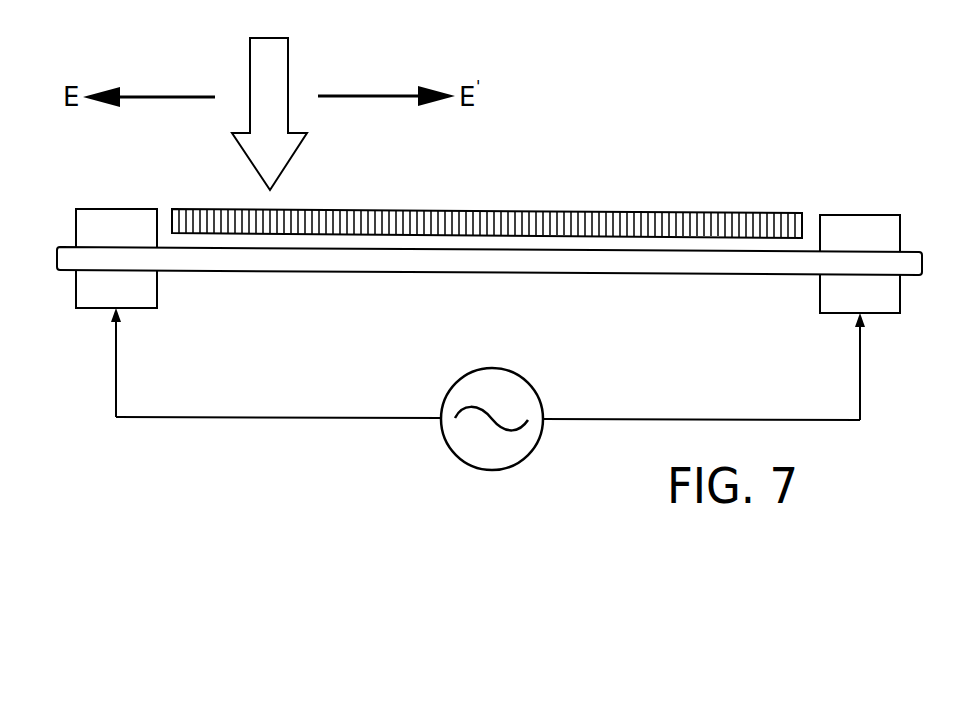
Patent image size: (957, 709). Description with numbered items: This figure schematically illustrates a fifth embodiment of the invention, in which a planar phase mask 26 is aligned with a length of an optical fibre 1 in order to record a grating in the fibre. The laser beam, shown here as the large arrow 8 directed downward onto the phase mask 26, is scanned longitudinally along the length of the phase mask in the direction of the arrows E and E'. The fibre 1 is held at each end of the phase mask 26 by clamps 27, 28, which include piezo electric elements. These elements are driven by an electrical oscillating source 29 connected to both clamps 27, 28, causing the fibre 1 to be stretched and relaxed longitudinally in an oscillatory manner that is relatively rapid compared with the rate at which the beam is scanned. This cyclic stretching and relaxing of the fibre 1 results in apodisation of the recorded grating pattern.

The optical fibre 1 is at (410, 267).
The incident light / radiation direction 8 is at (282, 48).
The planar phase mask 26 is at (718, 213).
The clamp 27 is at (147, 293).
The clamp 28 is at (832, 302).
The electrical oscillating source 29 is at (540, 393).